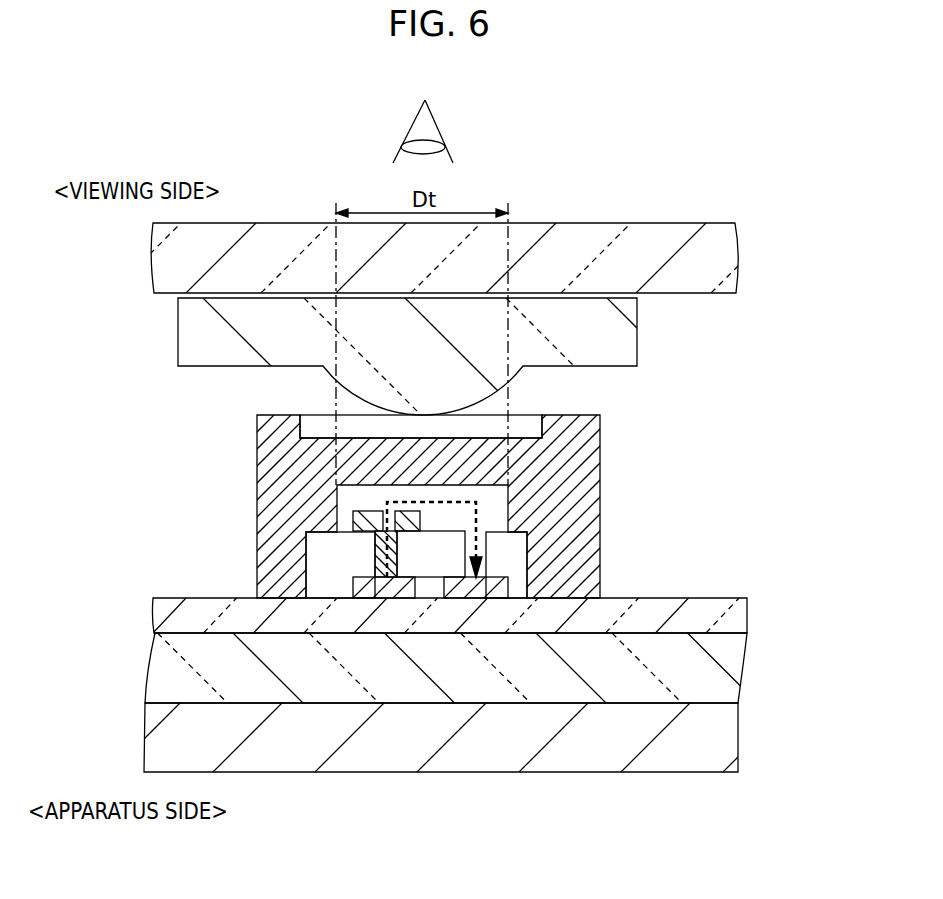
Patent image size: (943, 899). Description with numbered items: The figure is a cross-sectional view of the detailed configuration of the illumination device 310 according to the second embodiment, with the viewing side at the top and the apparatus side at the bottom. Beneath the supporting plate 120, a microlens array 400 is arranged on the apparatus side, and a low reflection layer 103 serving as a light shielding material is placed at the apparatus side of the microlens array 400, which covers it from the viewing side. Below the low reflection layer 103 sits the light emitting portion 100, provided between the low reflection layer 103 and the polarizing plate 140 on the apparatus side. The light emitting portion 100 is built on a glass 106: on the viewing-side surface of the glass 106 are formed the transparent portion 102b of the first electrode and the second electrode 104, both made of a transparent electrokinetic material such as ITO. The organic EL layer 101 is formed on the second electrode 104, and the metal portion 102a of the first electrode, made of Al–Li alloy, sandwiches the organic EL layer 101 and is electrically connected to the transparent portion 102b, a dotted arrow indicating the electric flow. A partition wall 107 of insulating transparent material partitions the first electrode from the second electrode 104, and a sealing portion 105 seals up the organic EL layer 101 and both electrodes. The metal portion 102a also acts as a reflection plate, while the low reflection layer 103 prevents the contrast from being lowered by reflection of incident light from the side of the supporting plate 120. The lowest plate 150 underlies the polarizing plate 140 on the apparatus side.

The illumination device 310 is at (667, 146).
The supporting plate 120 is at (262, 252).
The microlens array 400 is at (460, 337).
The light emitting portion 100 is at (216, 425).
The sealing portion 105 is at (580, 527).
The low reflection layer 103 is at (523, 423).
The organic EL layer 101 is at (353, 522).
The partition wall 107 is at (407, 554).
The second electrode 104 is at (353, 584).
The metal portion 102a is at (487, 522).
The transparent portion 102b is at (497, 583).
The glass 106 is at (740, 623).
The polarizing plate 140 is at (502, 695).
The apparatus base plate 150 is at (310, 752).